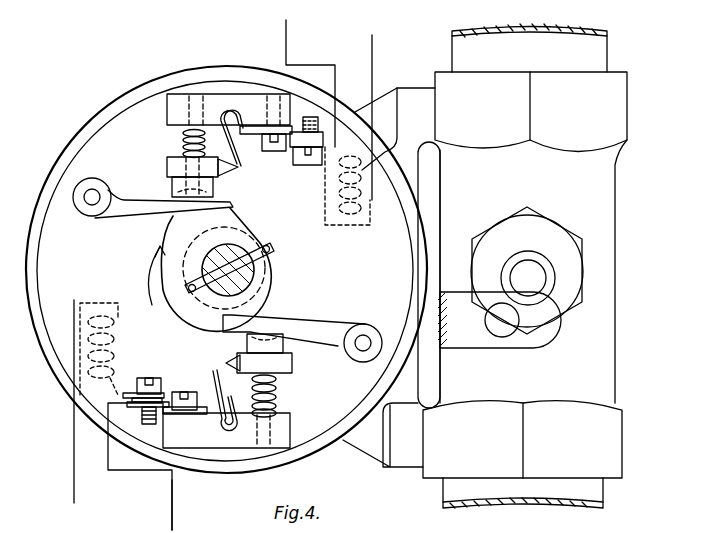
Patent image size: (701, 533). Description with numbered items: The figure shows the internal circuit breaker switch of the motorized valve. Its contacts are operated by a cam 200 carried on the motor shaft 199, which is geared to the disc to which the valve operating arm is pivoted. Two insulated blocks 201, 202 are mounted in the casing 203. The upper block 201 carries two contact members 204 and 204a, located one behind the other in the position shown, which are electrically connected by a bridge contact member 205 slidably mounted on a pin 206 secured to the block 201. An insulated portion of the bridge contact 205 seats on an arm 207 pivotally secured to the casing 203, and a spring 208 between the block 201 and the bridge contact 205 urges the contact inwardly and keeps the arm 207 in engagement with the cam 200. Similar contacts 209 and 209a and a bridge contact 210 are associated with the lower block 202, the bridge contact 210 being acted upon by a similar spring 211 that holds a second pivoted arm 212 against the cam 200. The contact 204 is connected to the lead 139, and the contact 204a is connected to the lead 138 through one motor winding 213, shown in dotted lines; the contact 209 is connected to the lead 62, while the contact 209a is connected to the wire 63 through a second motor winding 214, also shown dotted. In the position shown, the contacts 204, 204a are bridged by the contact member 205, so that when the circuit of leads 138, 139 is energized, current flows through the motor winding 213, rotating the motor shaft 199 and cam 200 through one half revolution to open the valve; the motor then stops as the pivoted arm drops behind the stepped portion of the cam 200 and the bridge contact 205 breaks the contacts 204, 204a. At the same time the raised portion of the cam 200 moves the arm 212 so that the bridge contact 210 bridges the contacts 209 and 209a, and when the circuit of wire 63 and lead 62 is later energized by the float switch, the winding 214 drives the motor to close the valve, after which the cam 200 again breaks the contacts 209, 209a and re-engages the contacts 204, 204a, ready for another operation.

The lead 62 is at (172, 500).
The wire 63 is at (73, 478).
The lead 138 is at (372, 66).
The lead 139 is at (285, 43).
The motor shaft 199 is at (250, 250).
The cam 200 is at (207, 271).
The upper insulated block 201 is at (213, 104).
The lower insulated block 202 is at (208, 440).
The casing 203 is at (143, 93).
The contact member 204 is at (233, 170).
The contact member 204a is at (239, 166).
The bridge contact member 205 is at (233, 180).
The pin 206 is at (182, 138).
The arm 207 is at (152, 208).
The spring 208 is at (182, 155).
The contact 209 is at (226, 364).
The contact 209a is at (220, 384).
The bridge contact 210 is at (236, 361).
The spring 211 is at (276, 405).
The second pivoted arm 212 is at (308, 327).
The motor winding 213 is at (340, 223).
The second motor winding 214 is at (118, 301).